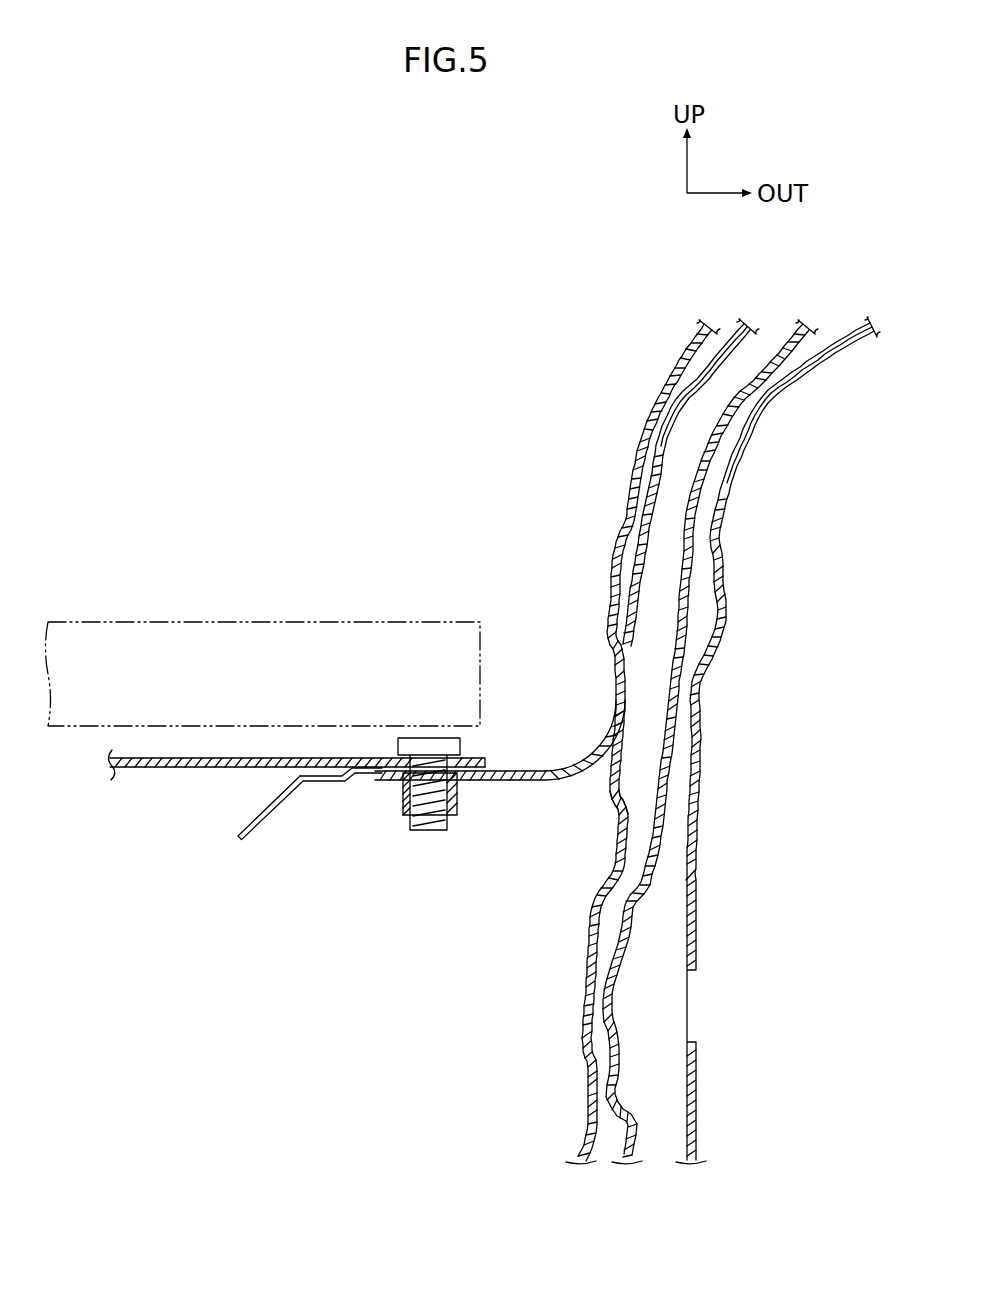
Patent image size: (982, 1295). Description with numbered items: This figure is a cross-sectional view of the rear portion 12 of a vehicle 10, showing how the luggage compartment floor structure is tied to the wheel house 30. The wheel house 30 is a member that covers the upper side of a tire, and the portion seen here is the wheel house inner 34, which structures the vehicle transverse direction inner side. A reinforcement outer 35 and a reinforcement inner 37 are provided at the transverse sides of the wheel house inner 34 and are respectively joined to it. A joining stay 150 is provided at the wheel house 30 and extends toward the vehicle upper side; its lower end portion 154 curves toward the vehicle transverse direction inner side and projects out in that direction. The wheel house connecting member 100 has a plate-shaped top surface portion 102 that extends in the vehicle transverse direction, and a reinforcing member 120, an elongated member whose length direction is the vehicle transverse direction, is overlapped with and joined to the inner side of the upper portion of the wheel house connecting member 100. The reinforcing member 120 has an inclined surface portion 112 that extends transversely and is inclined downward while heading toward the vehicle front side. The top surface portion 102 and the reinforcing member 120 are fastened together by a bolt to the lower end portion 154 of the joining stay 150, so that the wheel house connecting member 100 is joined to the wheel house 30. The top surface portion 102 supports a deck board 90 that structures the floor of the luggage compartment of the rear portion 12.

The vehicle 10 is at (485, 195).
The rear portion 12 is at (500, 280).
The wheel house 30 is at (645, 365).
The wheel house inner 34 is at (687, 585).
The reinforcement outer 35 is at (700, 742).
The reinforcement inner 37 is at (607, 793).
The deck board 90 is at (275, 622).
The wheel house connecting member 100 is at (172, 772).
The top surface portion 102 is at (247, 767).
The inclined surface portion 112 is at (273, 813).
The reinforcing member 120 is at (318, 787).
The joining stay 150 is at (623, 473).
The lower end portion 154 is at (527, 771).